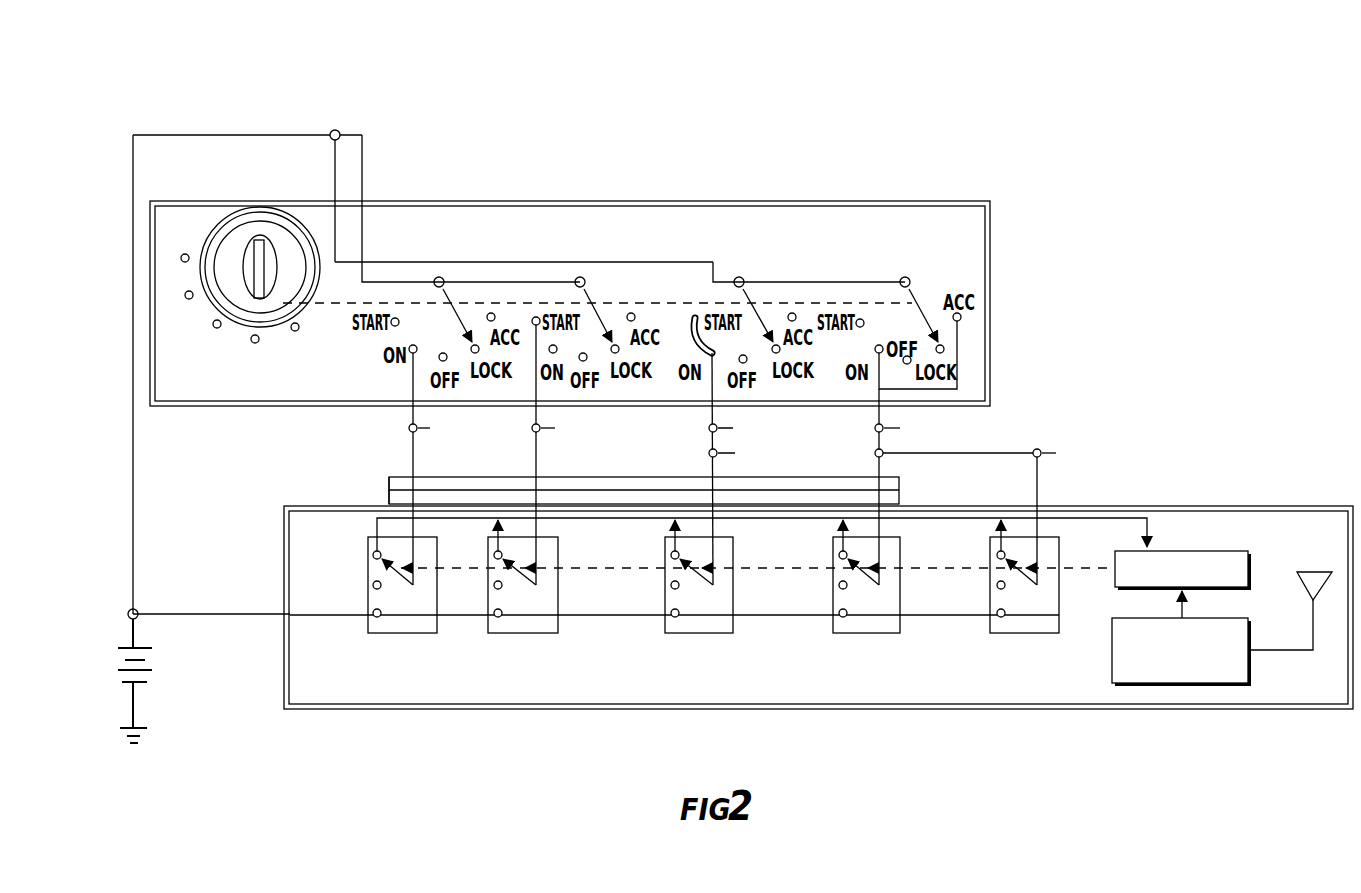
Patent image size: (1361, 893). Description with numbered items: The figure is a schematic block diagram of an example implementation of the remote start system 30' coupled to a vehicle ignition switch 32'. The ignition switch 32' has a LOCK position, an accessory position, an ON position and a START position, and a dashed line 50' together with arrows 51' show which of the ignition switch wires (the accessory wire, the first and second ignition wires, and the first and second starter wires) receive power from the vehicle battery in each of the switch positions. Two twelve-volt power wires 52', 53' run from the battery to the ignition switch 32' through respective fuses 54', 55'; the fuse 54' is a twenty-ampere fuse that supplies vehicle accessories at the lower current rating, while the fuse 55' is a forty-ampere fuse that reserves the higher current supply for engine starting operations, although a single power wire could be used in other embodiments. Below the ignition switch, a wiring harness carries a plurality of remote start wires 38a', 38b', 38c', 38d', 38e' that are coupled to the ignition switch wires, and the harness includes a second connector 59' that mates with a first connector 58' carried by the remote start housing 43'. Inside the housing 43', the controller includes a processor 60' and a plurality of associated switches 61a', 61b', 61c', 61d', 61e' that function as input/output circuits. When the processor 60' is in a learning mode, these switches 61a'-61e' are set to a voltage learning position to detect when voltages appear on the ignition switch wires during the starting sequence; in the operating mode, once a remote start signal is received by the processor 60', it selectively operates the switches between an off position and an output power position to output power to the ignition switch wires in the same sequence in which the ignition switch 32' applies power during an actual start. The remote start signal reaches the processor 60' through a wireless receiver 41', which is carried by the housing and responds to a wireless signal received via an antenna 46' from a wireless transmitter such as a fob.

The remote start system 30' is at (1323, 459).
The ignition switch 32' is at (606, 283).
The remote start wire 38a' is at (411, 469).
The remote start wire 38b' is at (553, 455).
The remote start wire 38c' is at (720, 469).
The remote start wire 38d' is at (883, 487).
The remote start wire 38e' is at (1000, 513).
The wireless receiver 41' is at (1177, 678).
The remote start housing 43' is at (818, 636).
The antenna 46' is at (1290, 586).
The dashed line 50' is at (536, 300).
The arrows 51' is at (930, 281).
The 12V power wire 52' is at (768, 251).
The 12V power wire 53' is at (524, 233).
The fuse 54' is at (247, 196).
The fuse 55' is at (471, 208).
The first connector 58' is at (672, 491).
The second connector 59' is at (357, 489).
The processor 60' is at (1192, 523).
The switch 61a' is at (386, 615).
The switch 61b' is at (507, 607).
The switch 61c' is at (683, 607).
The switch 61d' is at (851, 607).
The switch 61e' is at (1009, 607).